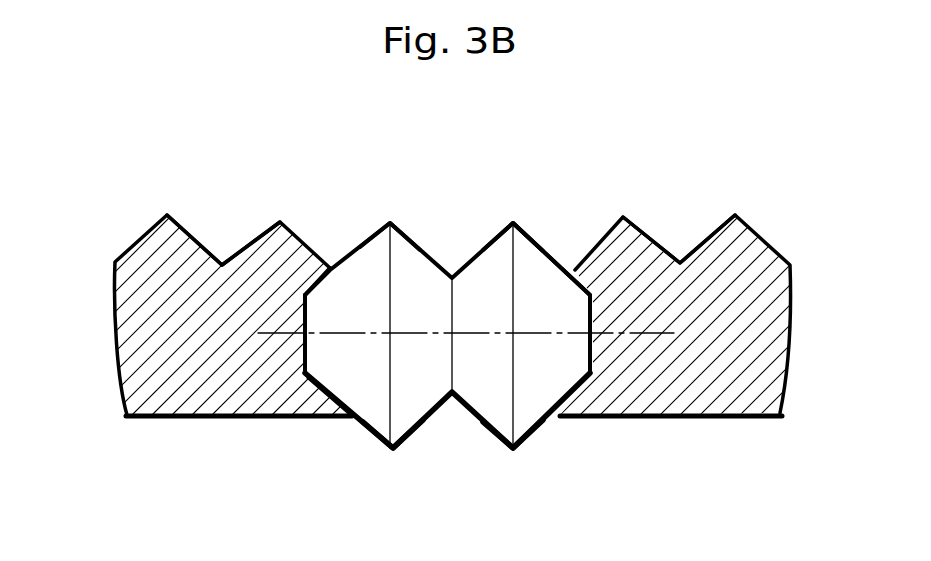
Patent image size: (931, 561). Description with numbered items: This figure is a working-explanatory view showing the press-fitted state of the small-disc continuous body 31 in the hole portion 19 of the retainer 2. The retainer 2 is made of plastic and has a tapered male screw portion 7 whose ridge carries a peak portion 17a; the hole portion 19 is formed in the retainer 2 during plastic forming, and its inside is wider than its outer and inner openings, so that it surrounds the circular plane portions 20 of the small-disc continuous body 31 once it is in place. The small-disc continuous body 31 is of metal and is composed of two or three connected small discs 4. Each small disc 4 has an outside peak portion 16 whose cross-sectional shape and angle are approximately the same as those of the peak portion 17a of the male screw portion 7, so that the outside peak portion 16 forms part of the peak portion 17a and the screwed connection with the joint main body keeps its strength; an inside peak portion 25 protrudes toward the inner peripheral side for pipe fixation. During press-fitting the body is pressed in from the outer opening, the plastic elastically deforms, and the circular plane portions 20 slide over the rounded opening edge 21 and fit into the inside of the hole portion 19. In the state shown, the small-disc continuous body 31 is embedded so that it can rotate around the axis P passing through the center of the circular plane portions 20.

The retainer 2 is at (206, 178).
The male screw portion 7 is at (759, 227).
The small disc 4 is at (476, 250).
The outside peak portion 16 is at (390, 222).
The peak portion 17a is at (286, 227).
The opening edge 21 is at (330, 267).
The small-disc continuous body 31 is at (530, 230).
The circular plane portion 20 is at (300, 353).
The hole portion 19 is at (323, 376).
The inside peak portion 25 is at (390, 449).
The axis P is at (479, 334).